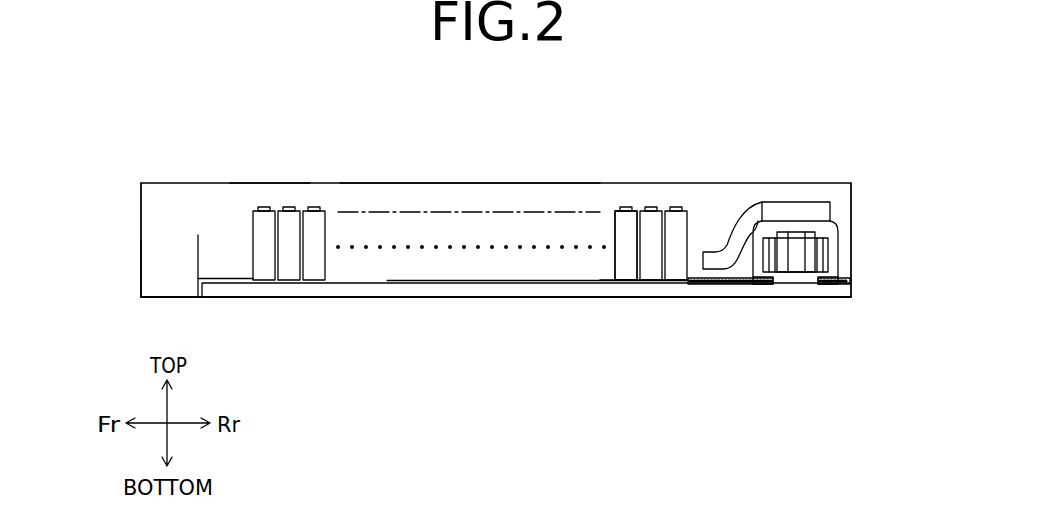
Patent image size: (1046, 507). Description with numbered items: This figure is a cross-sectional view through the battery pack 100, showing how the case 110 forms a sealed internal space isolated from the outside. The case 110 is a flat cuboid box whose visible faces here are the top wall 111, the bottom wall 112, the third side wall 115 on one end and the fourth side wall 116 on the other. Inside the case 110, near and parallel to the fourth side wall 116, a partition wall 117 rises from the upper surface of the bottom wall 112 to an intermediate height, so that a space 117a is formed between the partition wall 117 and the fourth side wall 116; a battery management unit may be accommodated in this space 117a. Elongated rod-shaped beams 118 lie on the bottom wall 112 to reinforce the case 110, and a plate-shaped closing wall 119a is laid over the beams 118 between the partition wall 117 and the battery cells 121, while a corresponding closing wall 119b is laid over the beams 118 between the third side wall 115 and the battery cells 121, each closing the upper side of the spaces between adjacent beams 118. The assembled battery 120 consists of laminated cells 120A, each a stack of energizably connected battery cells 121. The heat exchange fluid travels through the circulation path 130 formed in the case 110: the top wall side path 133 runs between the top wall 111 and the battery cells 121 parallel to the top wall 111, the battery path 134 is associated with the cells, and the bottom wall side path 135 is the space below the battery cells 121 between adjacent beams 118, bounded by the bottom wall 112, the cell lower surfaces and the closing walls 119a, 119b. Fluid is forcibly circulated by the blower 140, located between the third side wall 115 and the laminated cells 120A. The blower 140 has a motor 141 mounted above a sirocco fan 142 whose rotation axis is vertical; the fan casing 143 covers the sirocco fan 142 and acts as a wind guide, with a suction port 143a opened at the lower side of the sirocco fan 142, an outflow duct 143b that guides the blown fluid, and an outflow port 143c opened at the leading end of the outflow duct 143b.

The battery pack 100 is at (172, 182).
The case 110 is at (217, 183).
The top wall 111 is at (268, 183).
The bottom wall 112 is at (282, 297).
The third side wall 115 is at (852, 193).
The fourth side wall 116 is at (140, 207).
The partition wall 117 is at (198, 251).
The space 117a is at (165, 275).
The beams 118 is at (376, 286).
The closing wall 119a is at (230, 277).
The closing wall 119b is at (718, 275).
The assembled battery 120 is at (313, 200).
The laminated cells 120A is at (371, 208).
The battery cells 121 is at (625, 232).
The circulation path 130 is at (440, 198).
The top wall side path 133 is at (498, 197).
The battery path 134 is at (638, 232).
The bottom wall side path 135 is at (495, 290).
The blower 140 is at (769, 230).
The motor 141 is at (807, 237).
The sirocco fan 142 is at (832, 253).
The fan casing 143 is at (769, 249).
The suction port 143a is at (803, 278).
The outflow duct 143b is at (737, 263).
The outflow port 143c is at (700, 262).